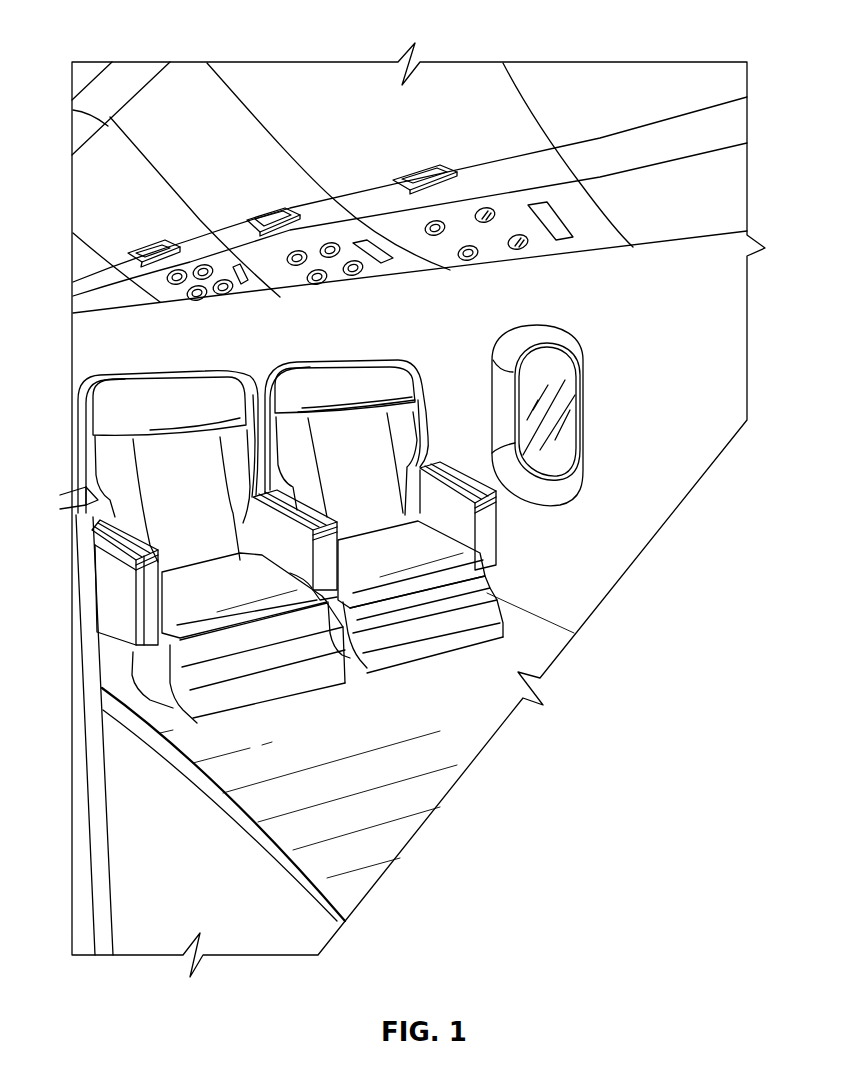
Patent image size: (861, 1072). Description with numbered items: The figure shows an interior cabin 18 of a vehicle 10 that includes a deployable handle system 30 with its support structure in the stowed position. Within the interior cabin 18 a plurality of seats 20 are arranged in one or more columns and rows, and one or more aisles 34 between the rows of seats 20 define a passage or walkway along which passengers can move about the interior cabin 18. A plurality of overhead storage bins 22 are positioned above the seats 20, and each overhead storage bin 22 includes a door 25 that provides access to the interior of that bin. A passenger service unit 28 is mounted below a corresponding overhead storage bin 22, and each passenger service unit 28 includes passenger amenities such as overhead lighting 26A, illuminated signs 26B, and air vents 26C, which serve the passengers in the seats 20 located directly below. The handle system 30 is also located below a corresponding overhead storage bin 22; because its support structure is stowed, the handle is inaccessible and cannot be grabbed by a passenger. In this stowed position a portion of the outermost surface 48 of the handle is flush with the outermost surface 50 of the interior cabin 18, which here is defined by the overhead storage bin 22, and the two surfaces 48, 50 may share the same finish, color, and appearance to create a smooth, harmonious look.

The vehicle 10 is at (767, 163).
The interior cabin 18 is at (618, 372).
The seats 20 is at (170, 395).
The overhead storage bins 22 is at (182, 80).
The door 25 is at (487, 77).
The overhead lighting 26A is at (497, 208).
The illuminated signs 26B is at (560, 208).
The air vents 26C is at (435, 220).
The passenger service unit 28 is at (268, 277).
The handle system 30 is at (215, 235).
The aisles 34 is at (233, 847).
The outermost surface of the handle 48 is at (167, 267).
The outermost surface of the interior cabin 50 is at (100, 234).